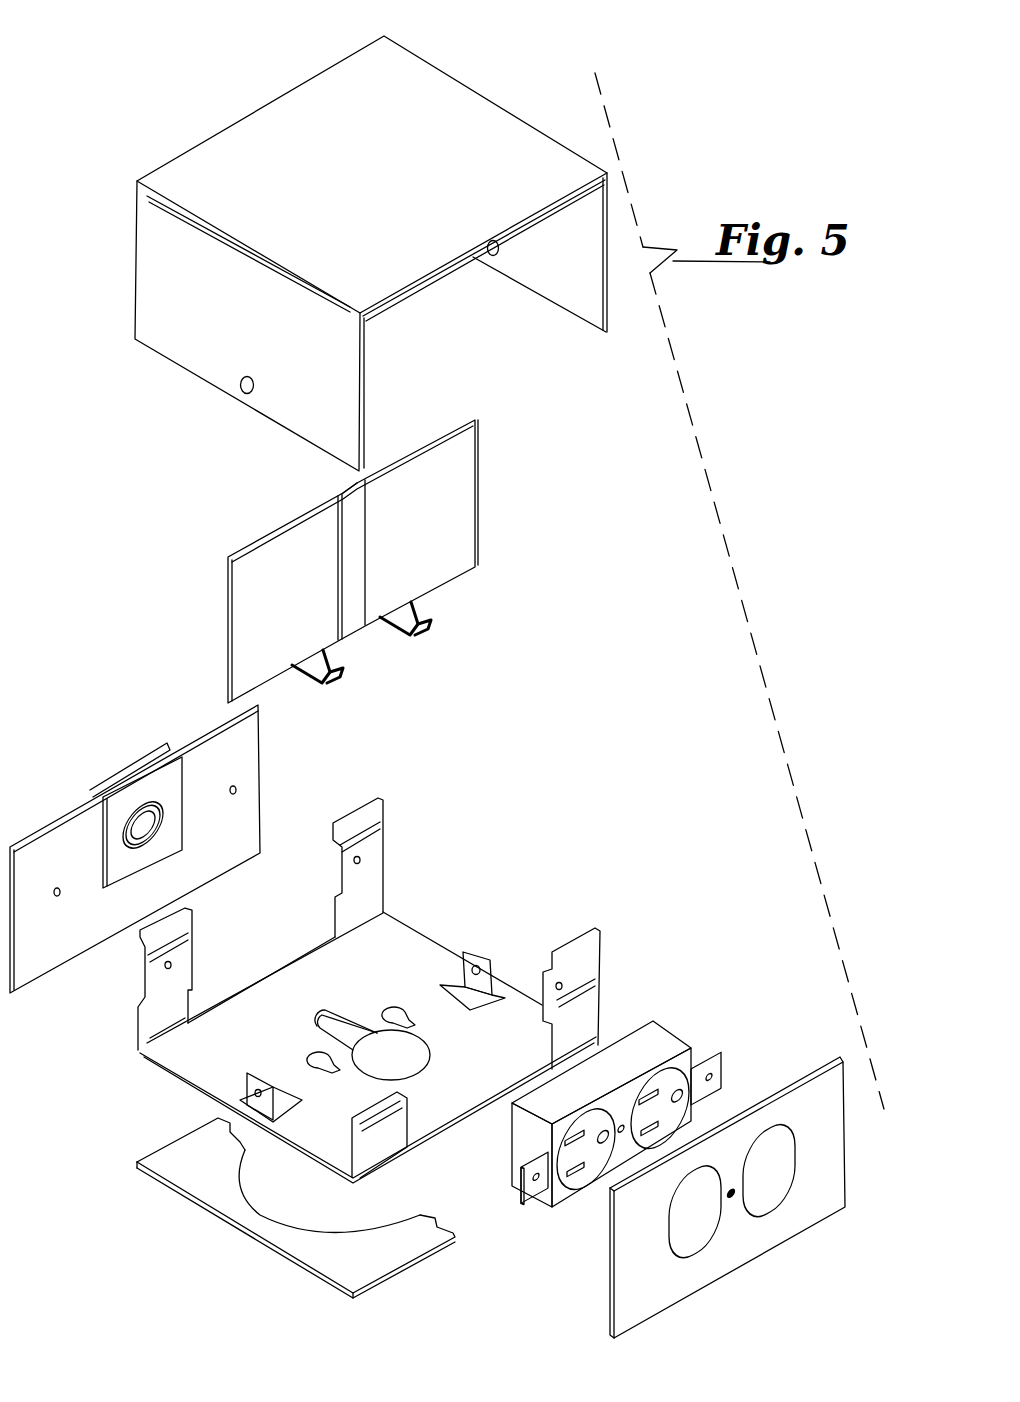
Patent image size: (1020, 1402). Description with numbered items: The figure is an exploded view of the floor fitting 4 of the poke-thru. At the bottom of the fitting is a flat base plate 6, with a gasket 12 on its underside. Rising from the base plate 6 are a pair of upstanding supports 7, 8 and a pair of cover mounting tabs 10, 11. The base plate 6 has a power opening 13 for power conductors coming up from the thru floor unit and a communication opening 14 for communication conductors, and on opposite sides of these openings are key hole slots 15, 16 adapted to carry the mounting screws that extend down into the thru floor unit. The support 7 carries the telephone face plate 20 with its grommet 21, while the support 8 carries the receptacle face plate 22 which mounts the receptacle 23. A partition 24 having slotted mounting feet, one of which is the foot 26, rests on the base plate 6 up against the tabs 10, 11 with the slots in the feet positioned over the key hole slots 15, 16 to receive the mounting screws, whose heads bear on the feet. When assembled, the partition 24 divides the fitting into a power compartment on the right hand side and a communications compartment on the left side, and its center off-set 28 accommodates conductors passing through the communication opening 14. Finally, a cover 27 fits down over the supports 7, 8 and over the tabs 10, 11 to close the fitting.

The floor fitting 4 is at (514, 549).
The base plate 6 is at (392, 990).
The upstanding support 7 is at (333, 853).
The upstanding support 8 is at (397, 1127).
The cover mounting tab 10 is at (245, 1075).
The cover mounting tab 11 is at (487, 960).
The gasket 12 is at (205, 1185).
The power opening 13 is at (430, 1053).
The communication opening 14 is at (317, 1028).
The key hole slot 15 is at (327, 1074).
The key hole slot 16 is at (393, 1007).
The telephone face plate 20 is at (168, 849).
The grommet 21 is at (143, 797).
The receptacle face plate 22 is at (638, 1262).
The receptacle 23 is at (579, 1179).
The partition 24 is at (339, 565).
The slotted mounting foot 26 is at (343, 665).
The cover 27 is at (158, 289).
The center off-set 28 is at (355, 488).